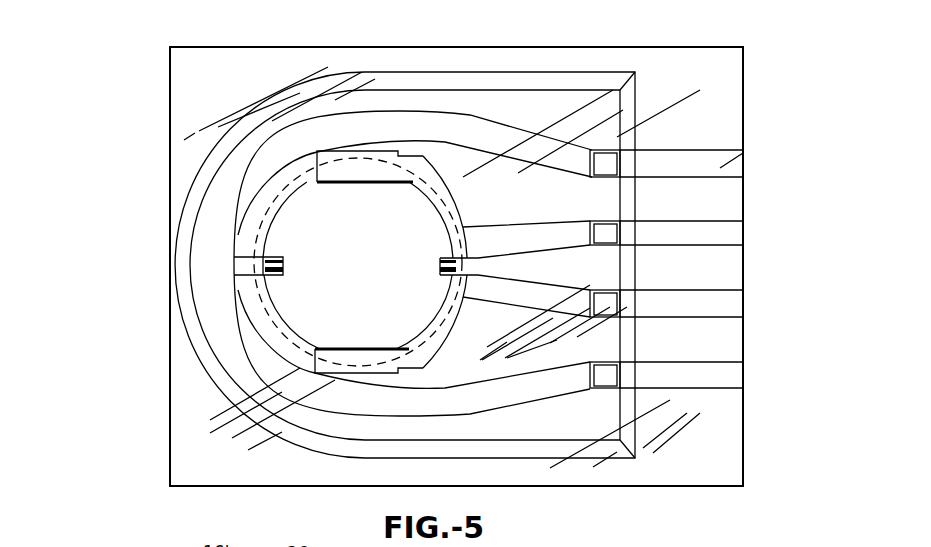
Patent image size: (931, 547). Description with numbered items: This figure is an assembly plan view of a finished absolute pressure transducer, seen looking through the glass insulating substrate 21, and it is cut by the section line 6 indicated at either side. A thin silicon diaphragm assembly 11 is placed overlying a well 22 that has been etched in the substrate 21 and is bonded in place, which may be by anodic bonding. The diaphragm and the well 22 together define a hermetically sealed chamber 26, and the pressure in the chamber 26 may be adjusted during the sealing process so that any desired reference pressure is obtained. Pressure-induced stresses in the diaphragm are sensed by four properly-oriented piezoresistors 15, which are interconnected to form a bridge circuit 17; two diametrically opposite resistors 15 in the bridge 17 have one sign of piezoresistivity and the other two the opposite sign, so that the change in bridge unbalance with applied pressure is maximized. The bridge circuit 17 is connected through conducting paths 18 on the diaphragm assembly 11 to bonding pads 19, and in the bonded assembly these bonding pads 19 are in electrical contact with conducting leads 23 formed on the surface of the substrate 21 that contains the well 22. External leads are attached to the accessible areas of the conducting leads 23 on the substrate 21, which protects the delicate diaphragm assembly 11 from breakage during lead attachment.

The section line 6- 6 is at (160, 266).
The silicon diaphragm assembly 11 is at (537, 459).
The piezoresistors 15 is at (337, 182).
The bridge circuit 17 is at (322, 309).
The conducting paths 18 is at (473, 130).
The bonding pads 19 is at (603, 150).
The glass insulating substrate 21 is at (598, 47).
The well 22 is at (370, 370).
The conducting leads 23 is at (718, 163).
The hermetically sealed chamber 26 is at (347, 230).